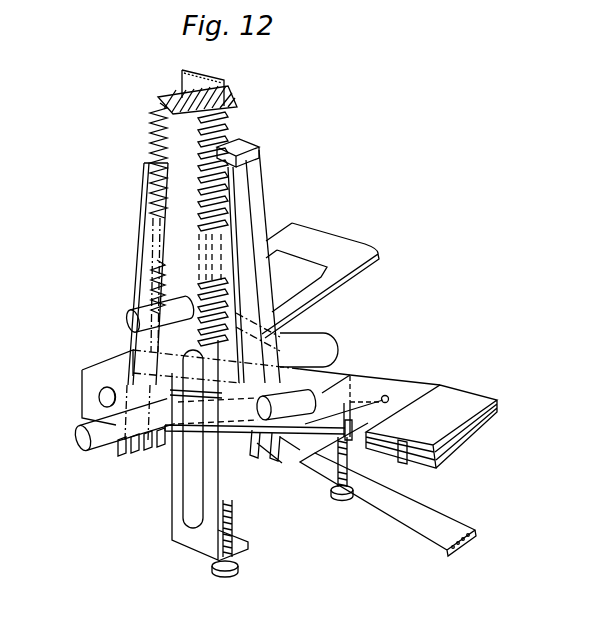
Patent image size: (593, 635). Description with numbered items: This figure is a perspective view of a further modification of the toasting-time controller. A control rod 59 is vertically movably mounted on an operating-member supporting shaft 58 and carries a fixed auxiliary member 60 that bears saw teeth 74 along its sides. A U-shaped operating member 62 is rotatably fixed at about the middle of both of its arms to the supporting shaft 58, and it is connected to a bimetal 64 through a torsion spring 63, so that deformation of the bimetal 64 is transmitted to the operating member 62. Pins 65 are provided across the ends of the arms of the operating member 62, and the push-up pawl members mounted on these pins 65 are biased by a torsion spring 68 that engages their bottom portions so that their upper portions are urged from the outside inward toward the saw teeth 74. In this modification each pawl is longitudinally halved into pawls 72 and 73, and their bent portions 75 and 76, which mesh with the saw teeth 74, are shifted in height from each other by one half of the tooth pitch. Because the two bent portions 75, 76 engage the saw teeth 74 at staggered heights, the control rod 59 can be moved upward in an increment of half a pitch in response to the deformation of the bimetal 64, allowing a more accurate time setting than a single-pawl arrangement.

The operating-member supporting shaft 58 is at (78, 437).
The control rod 59 is at (226, 92).
The auxiliary member 60 is at (170, 111).
The operating member 62 is at (81, 372).
The torsion spring 63 is at (307, 403).
The bimetal 64 is at (402, 390).
The pins 65 is at (98, 397).
The torsion spring 68 is at (117, 458).
The pawl 72 is at (240, 205).
The pawl 73 is at (258, 182).
The saw teeth 74 is at (158, 130).
The bent portion 75 is at (247, 150).
The bent portion 76 is at (246, 156).